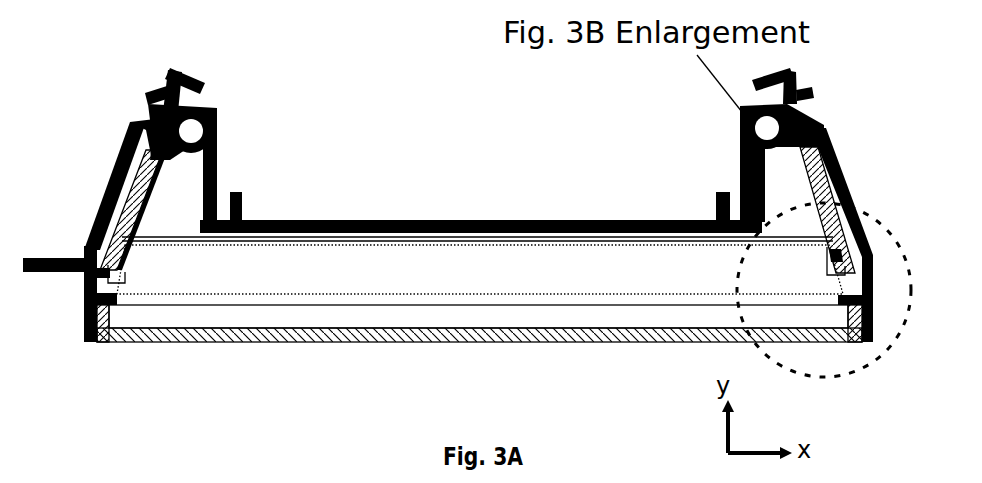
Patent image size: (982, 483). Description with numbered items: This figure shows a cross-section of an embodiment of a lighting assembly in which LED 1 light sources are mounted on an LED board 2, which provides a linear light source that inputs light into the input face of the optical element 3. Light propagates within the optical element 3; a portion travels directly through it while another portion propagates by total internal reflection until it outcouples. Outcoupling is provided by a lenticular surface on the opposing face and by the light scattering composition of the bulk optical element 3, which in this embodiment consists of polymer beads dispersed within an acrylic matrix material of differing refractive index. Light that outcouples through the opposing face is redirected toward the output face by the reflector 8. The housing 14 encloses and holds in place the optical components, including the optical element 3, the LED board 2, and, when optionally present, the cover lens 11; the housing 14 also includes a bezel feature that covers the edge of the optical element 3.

The housing 14 is at (218, 157).
The reflector 8 is at (480, 238).
The optical element 3 is at (520, 268).
The LED board 2 is at (848, 202).
The LED 1 is at (837, 258).
The cover lens 11 is at (490, 334).